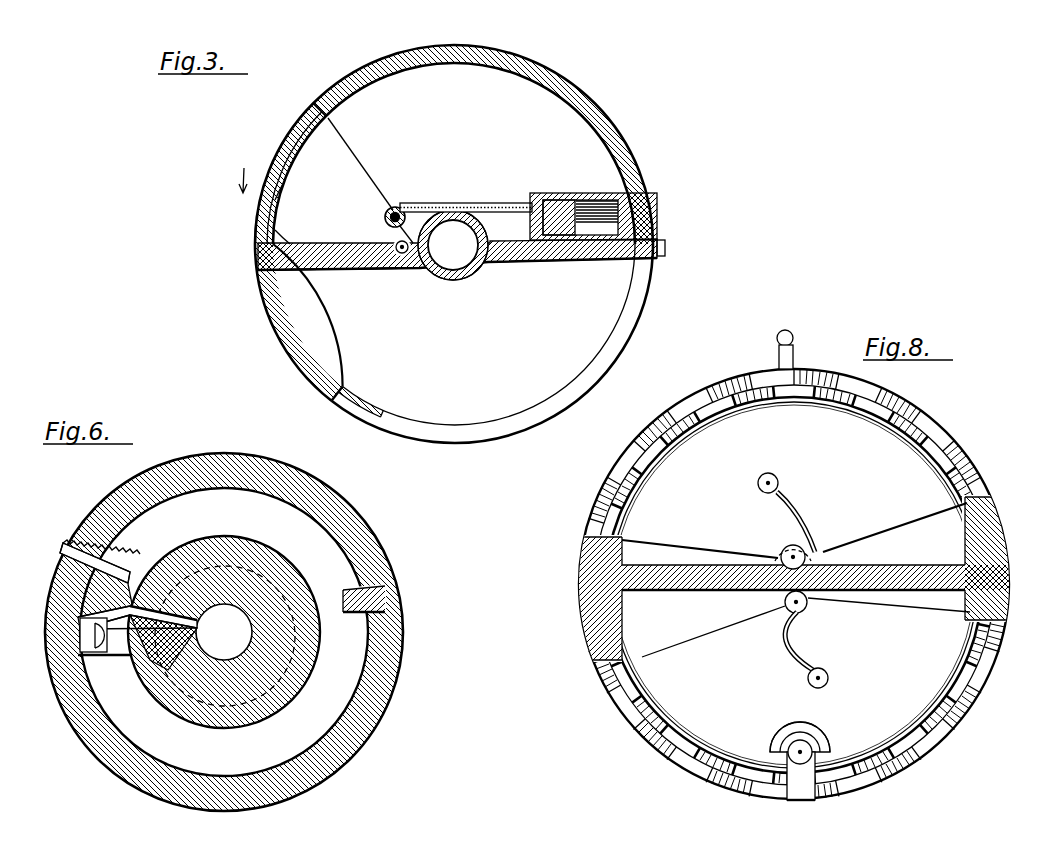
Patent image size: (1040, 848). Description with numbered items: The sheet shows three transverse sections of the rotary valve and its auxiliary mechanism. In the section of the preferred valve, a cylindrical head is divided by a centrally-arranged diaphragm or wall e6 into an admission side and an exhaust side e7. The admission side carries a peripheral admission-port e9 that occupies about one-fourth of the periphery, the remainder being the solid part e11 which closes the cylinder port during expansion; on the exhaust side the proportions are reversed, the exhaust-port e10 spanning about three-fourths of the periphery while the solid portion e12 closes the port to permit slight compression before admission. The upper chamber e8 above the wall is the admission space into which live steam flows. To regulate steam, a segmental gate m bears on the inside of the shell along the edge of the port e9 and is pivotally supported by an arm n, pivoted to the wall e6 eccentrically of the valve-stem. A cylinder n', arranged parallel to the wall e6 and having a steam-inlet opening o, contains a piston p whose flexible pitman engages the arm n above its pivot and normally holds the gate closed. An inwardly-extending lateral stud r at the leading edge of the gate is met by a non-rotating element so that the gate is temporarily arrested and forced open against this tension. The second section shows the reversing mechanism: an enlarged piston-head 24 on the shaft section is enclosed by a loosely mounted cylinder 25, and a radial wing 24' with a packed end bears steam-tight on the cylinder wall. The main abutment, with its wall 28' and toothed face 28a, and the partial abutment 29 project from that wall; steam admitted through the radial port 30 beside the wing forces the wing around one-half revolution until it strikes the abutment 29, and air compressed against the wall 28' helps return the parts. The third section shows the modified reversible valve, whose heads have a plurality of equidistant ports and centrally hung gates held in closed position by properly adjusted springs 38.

In FIG. 3, the solid part of the head e11 is at (597, 90).
In FIG. 3, the admission-port e9 is at (289, 138).
In FIG. 3, the arm n is at (470, 277).
In FIG. 3, the gate m is at (283, 205).
In FIG. 3, the lateral stud r is at (257, 241).
In FIG. 3, the upper chamber e8 is at (370, 182).
In FIG. 3, the steam-inlet opening o is at (548, 193).
In FIG. 3, the cylinder n' is at (590, 187).
In FIG. 3, the diaphragm or wall e6 is at (350, 268).
In FIG. 3, the piston p is at (558, 226).
In FIG. 3, the exhaust side e7 is at (489, 334).
In FIG. 3, the exhaust-port e10 is at (624, 347).
In FIG. 3, the solid portion e12 is at (281, 343).
In FIG. 6, the cylinder 25 is at (371, 748).
In FIG. 6, the abutment 29 is at (347, 583).
In FIG. 6, the piston-head 24 is at (260, 649).
In FIG. 6, the toothed rack 28a is at (135, 554).
In FIG. 6, the wall of the abutment 28' is at (99, 609).
In FIG. 6, the port 30 is at (170, 632).
In FIG. 6, the radial wing 24' is at (105, 660).
In FIG. 8, the springs 38 is at (806, 524).